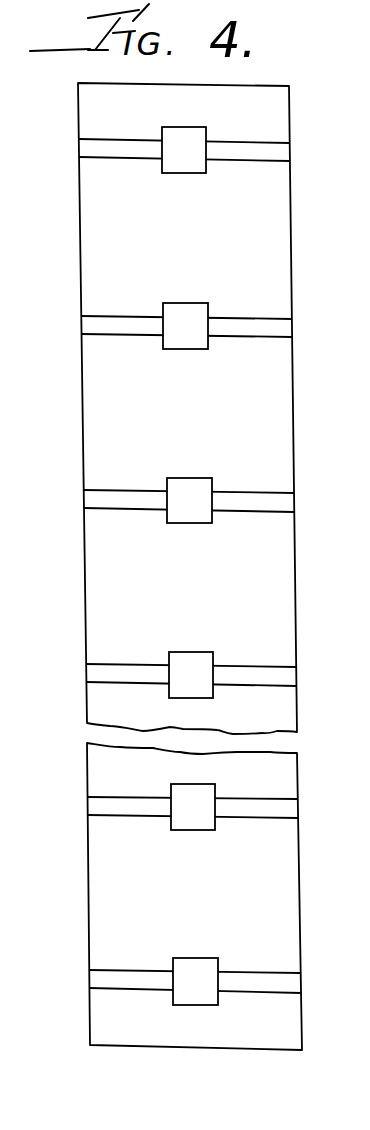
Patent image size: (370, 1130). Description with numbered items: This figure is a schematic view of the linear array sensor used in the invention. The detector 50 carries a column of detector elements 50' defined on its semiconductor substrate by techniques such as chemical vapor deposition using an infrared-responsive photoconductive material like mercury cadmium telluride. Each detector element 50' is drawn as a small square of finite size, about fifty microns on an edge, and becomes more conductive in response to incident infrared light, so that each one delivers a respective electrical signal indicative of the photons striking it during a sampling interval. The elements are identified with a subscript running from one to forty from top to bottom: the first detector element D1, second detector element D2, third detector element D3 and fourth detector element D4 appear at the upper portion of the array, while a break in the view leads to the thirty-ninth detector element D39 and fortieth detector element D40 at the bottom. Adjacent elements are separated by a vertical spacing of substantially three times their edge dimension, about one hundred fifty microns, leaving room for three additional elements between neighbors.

The detector 50 is at (167, 566).
The detector elements 50' is at (190, 585).
The first detector element D1 is at (207, 129).
The second detector element D2 is at (208, 308).
The third detector element D3 is at (213, 482).
The fourth detector element D4 is at (217, 659).
The thirty-ninth detector element D39 is at (216, 788).
The fortieth detector element D40 is at (220, 961).